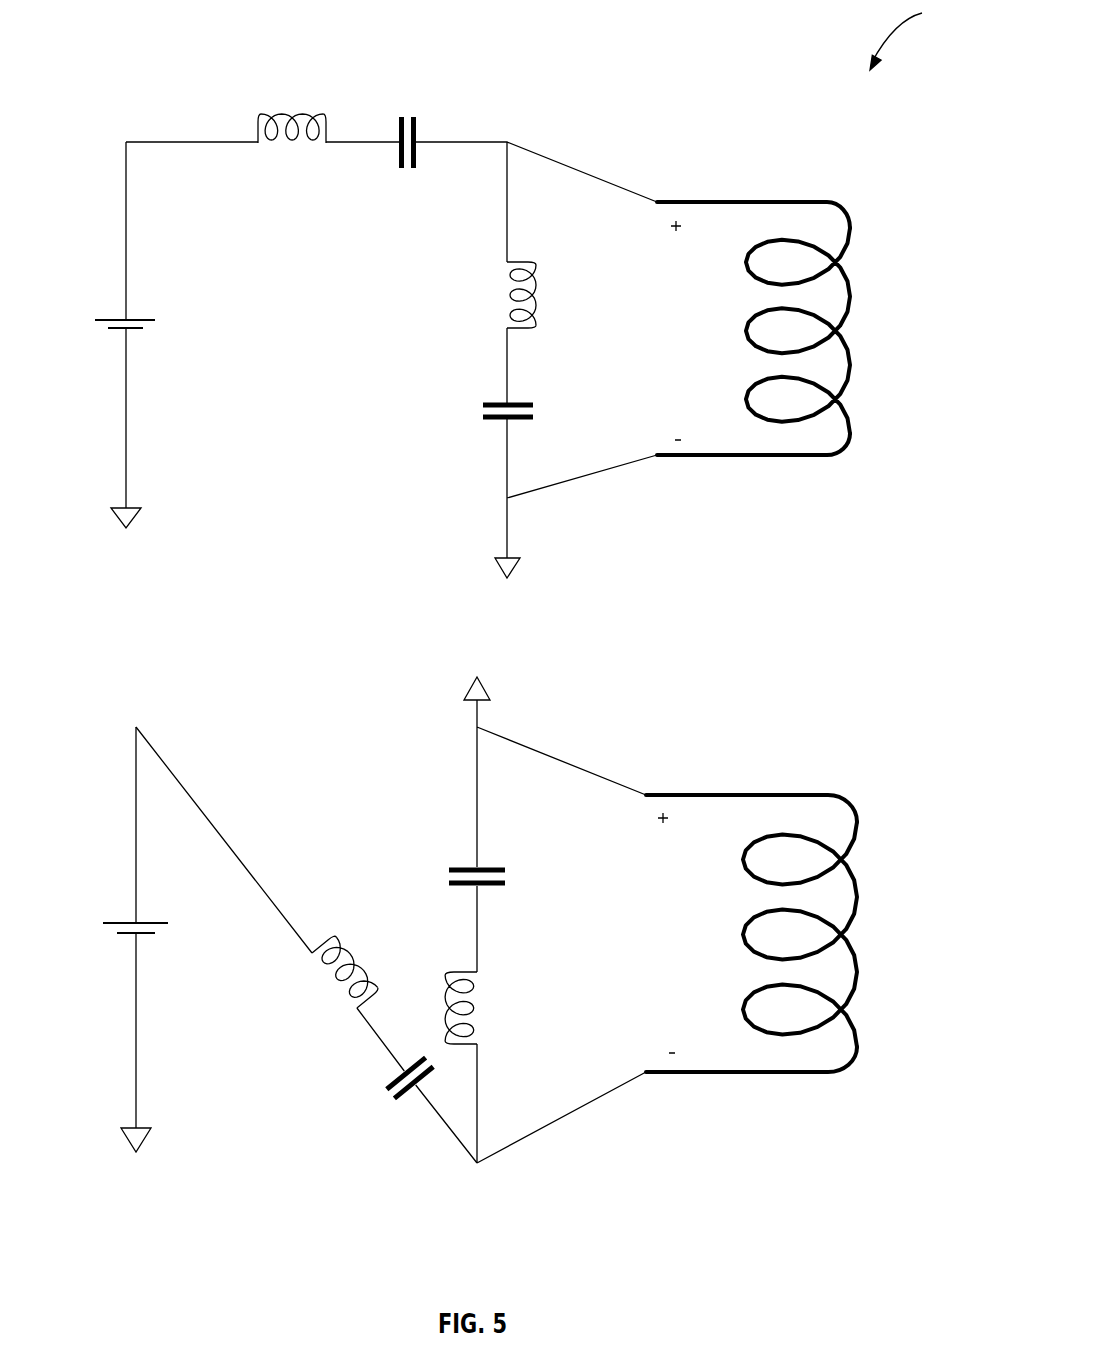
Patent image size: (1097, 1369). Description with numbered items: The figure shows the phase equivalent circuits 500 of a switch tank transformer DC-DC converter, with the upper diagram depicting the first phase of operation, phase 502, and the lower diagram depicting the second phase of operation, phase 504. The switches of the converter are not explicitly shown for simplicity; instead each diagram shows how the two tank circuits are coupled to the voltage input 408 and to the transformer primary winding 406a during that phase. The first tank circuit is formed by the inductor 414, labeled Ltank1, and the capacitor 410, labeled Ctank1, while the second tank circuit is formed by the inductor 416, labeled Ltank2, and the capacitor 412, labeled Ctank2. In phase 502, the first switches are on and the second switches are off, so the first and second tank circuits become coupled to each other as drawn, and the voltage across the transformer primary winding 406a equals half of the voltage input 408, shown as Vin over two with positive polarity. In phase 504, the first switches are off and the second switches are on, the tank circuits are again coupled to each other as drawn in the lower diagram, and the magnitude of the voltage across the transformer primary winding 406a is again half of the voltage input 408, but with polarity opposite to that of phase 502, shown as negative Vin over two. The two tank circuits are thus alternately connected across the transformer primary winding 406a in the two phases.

The phase equivalent circuits 500 is at (915, 35).
The voltage input 408 is at (87, 953).
The inductor 414 is at (600, 1020).
The capacitor 410 is at (627, 893).
The inductor 416 is at (417, 925).
The capacitor 412 is at (346, 1143).
The transformer primary winding 406a is at (751, 673).
The phase 502 is at (522, 623).
The phase 504 is at (530, 1208).